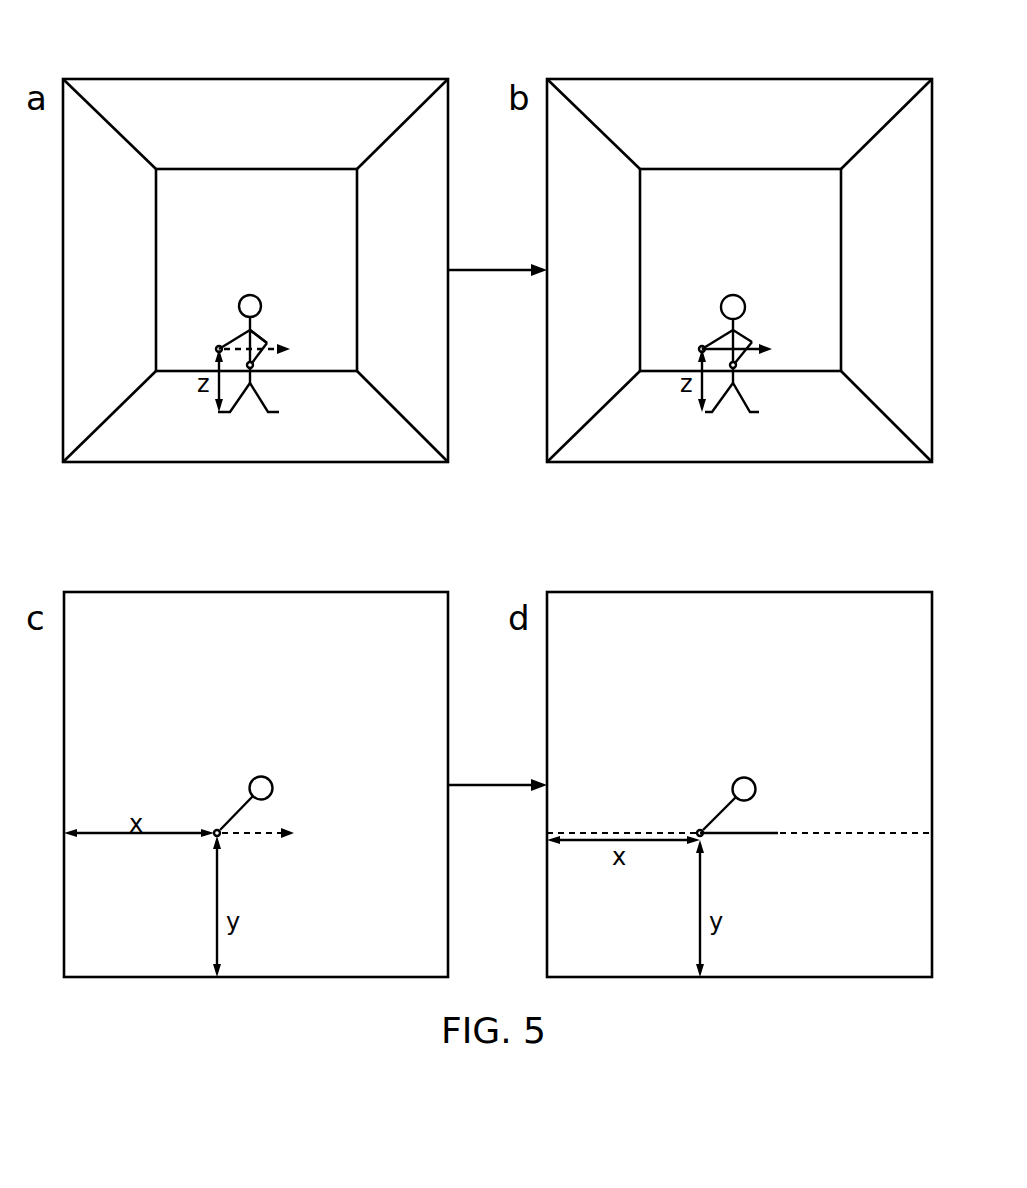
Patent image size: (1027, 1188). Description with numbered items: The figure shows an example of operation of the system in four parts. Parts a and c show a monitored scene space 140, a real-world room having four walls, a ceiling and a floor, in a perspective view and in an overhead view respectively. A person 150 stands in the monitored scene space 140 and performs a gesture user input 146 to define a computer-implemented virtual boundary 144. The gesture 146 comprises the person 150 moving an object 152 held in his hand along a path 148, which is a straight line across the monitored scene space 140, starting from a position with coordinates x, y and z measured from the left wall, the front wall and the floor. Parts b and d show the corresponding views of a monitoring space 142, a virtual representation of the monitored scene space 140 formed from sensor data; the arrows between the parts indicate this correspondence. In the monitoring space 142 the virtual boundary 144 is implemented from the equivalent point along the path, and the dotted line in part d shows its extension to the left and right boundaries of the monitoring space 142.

The monitored scene space 140 is at (327, 100).
The monitoring space 142 is at (810, 100).
The computer-implemented virtual boundary 144 is at (753, 351).
The gesture user input 146 is at (268, 349).
The path 148 is at (290, 336).
The person 150 is at (252, 296).
The object 152 is at (217, 347).